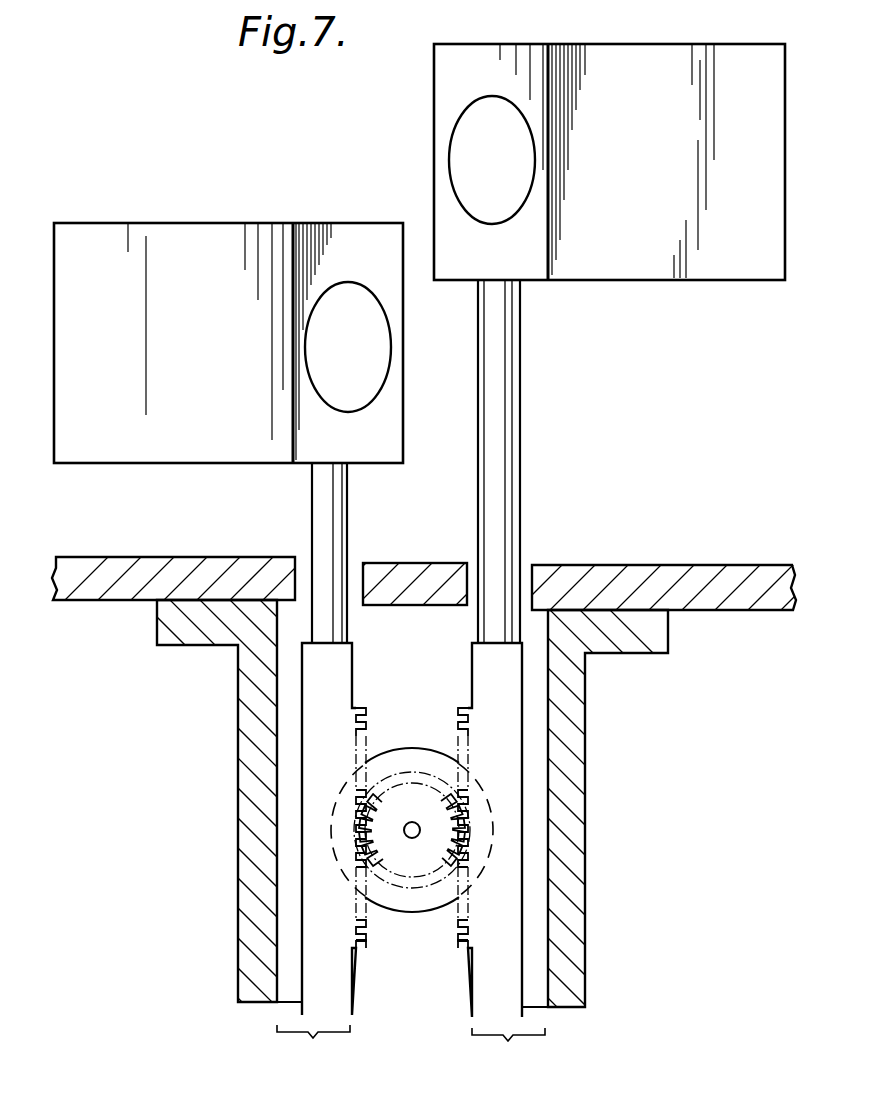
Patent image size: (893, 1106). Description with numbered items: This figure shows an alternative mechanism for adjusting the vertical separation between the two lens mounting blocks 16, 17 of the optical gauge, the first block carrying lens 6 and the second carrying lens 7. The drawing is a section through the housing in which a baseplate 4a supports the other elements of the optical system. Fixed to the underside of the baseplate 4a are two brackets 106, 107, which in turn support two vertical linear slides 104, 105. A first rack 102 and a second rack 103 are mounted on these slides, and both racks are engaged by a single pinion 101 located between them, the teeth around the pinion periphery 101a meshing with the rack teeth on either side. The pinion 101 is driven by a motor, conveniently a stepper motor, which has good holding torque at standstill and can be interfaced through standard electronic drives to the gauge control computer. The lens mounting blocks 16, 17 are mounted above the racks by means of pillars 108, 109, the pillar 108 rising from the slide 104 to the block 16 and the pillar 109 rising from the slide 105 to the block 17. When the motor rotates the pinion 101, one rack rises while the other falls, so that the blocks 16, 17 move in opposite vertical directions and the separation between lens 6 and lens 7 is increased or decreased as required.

The lens mounting block 16 is at (190, 366).
The lens 6 is at (356, 366).
The lens mounting block 17 is at (650, 176).
The lens 7 is at (499, 176).
The pillar 108 is at (318, 514).
The pillar 109 is at (505, 452).
The baseplate 4a is at (709, 585).
The bracket 106 is at (243, 918).
The bracket 107 is at (560, 941).
The vertical linear slide 104 is at (321, 855).
The vertical linear slide 105 is at (501, 856).
The pinion 101 is at (399, 805).
The pinion periphery 101a is at (406, 905).
The rack 102 is at (371, 964).
The rack 103 is at (458, 966).